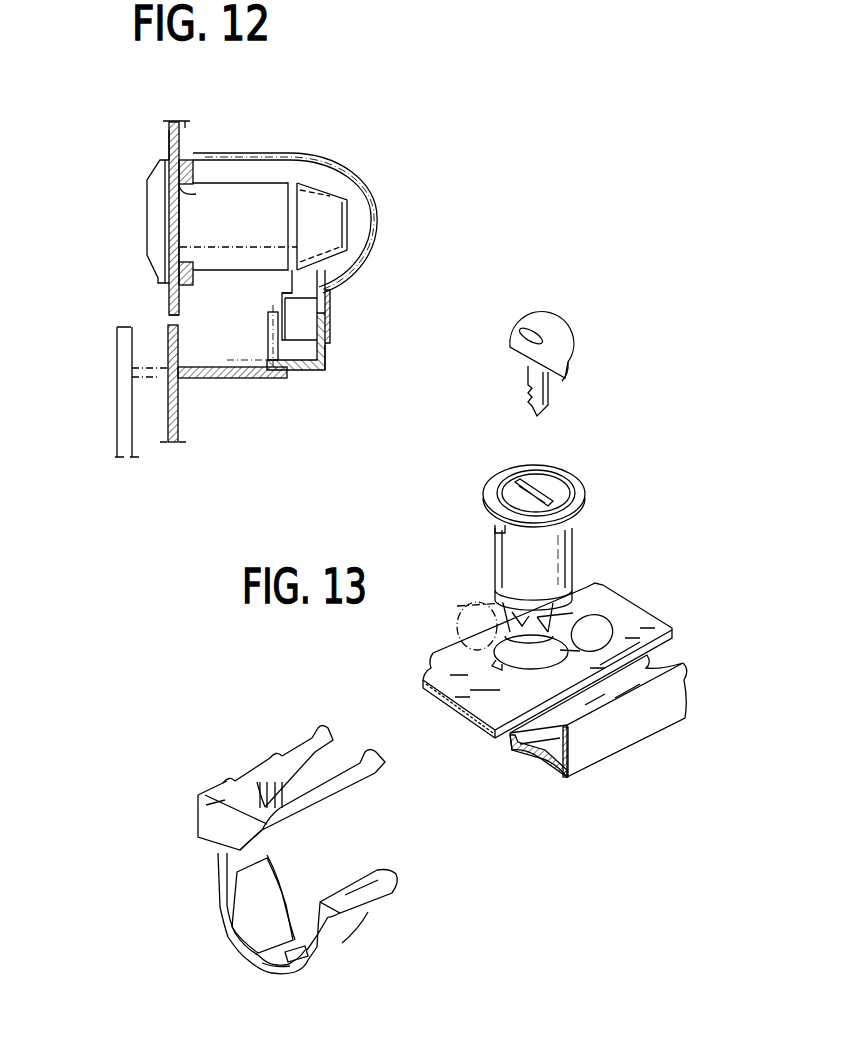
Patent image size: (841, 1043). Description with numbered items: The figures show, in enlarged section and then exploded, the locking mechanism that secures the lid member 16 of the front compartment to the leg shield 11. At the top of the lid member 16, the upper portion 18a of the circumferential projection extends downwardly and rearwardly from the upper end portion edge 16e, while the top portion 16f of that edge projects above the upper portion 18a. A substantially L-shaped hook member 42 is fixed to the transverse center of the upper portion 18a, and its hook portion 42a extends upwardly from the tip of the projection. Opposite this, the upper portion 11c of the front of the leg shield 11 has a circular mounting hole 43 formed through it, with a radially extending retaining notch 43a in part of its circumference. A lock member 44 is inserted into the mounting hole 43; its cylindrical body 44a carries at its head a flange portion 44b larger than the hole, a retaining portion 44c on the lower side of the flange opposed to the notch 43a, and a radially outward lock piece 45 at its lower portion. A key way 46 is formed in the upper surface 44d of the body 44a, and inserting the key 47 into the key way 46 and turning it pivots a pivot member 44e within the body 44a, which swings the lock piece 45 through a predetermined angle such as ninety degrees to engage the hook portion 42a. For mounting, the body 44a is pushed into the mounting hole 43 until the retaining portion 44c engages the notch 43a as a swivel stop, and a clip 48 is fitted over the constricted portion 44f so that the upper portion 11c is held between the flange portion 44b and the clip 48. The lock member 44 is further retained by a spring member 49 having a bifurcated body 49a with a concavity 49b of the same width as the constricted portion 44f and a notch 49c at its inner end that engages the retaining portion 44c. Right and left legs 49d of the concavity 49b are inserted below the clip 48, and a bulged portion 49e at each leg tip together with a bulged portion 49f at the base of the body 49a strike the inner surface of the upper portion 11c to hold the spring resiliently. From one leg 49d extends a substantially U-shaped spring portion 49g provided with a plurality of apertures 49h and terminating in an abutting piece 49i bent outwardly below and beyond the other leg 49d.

In FIG. 12, the leg shield 11 is at (181, 124).
In FIG. 12, the upper portion of the front portion 11c is at (168, 140).
In FIG. 13, the upper portion of the front portion 11c is at (665, 616).
In FIG. 12, the lid member 16 is at (178, 425).
In FIG. 12, the upper end portion edge 16e is at (170, 348).
In FIG. 12, the top portion 16f is at (170, 317).
In FIG. 12, the upper portion of the circumferential projection 18a is at (268, 380).
In FIG. 12, the hook member 42 is at (324, 371).
In FIG. 13, the hook member 42 is at (633, 720).
In FIG. 12, the hook portion 42a is at (330, 344).
In FIG. 13, the hook portion 42a is at (553, 748).
In FIG. 12, the mounting hole 43 is at (176, 192).
In FIG. 13, the mounting hole 43 is at (543, 662).
In FIG. 13, the retaining notch 43a is at (495, 666).
In FIG. 12, the lock member 44 is at (146, 198).
In FIG. 13, the lock member 44 is at (564, 546).
In FIG. 12, the body 44a is at (262, 195).
In FIG. 13, the body 44a is at (505, 553).
In FIG. 12, the flange portion 44b is at (157, 225).
In FIG. 13, the flange portion 44b is at (584, 493).
In FIG. 13, the retaining portion 44c is at (494, 529).
In FIG. 13, the upper surface 44d is at (549, 480).
In FIG. 12, the pivot member 44e is at (313, 187).
In FIG. 13, the pivot member 44e is at (500, 604).
In FIG. 12, the constricted portion 44f is at (186, 264).
In FIG. 12, the lock piece 45 is at (330, 363).
In FIG. 13, the lock piece 45 is at (590, 610).
In FIG. 13, the key way 46 is at (524, 486).
In FIG. 13, the key 47 is at (530, 374).
In FIG. 12, the clip 48 is at (190, 162).
In FIG. 12, the spring member 49 is at (305, 155).
In FIG. 13, the spring member 49 is at (224, 952).
In FIG. 13, the bifurcated body 49a is at (325, 808).
In FIG. 13, the concavity 49b is at (335, 762).
In FIG. 13, the notch 49c is at (258, 800).
In FIG. 13, the legs 49d is at (290, 757).
In FIG. 13, the bulged portion 49e is at (322, 730).
In FIG. 13, the bulged portion 49f is at (210, 800).
In FIG. 13, the spring portion 49g is at (265, 966).
In FIG. 13, the apertures 49h is at (245, 889).
In FIG. 12, the abutting piece 49i is at (331, 318).
In FIG. 13, the abutting piece 49i is at (396, 882).